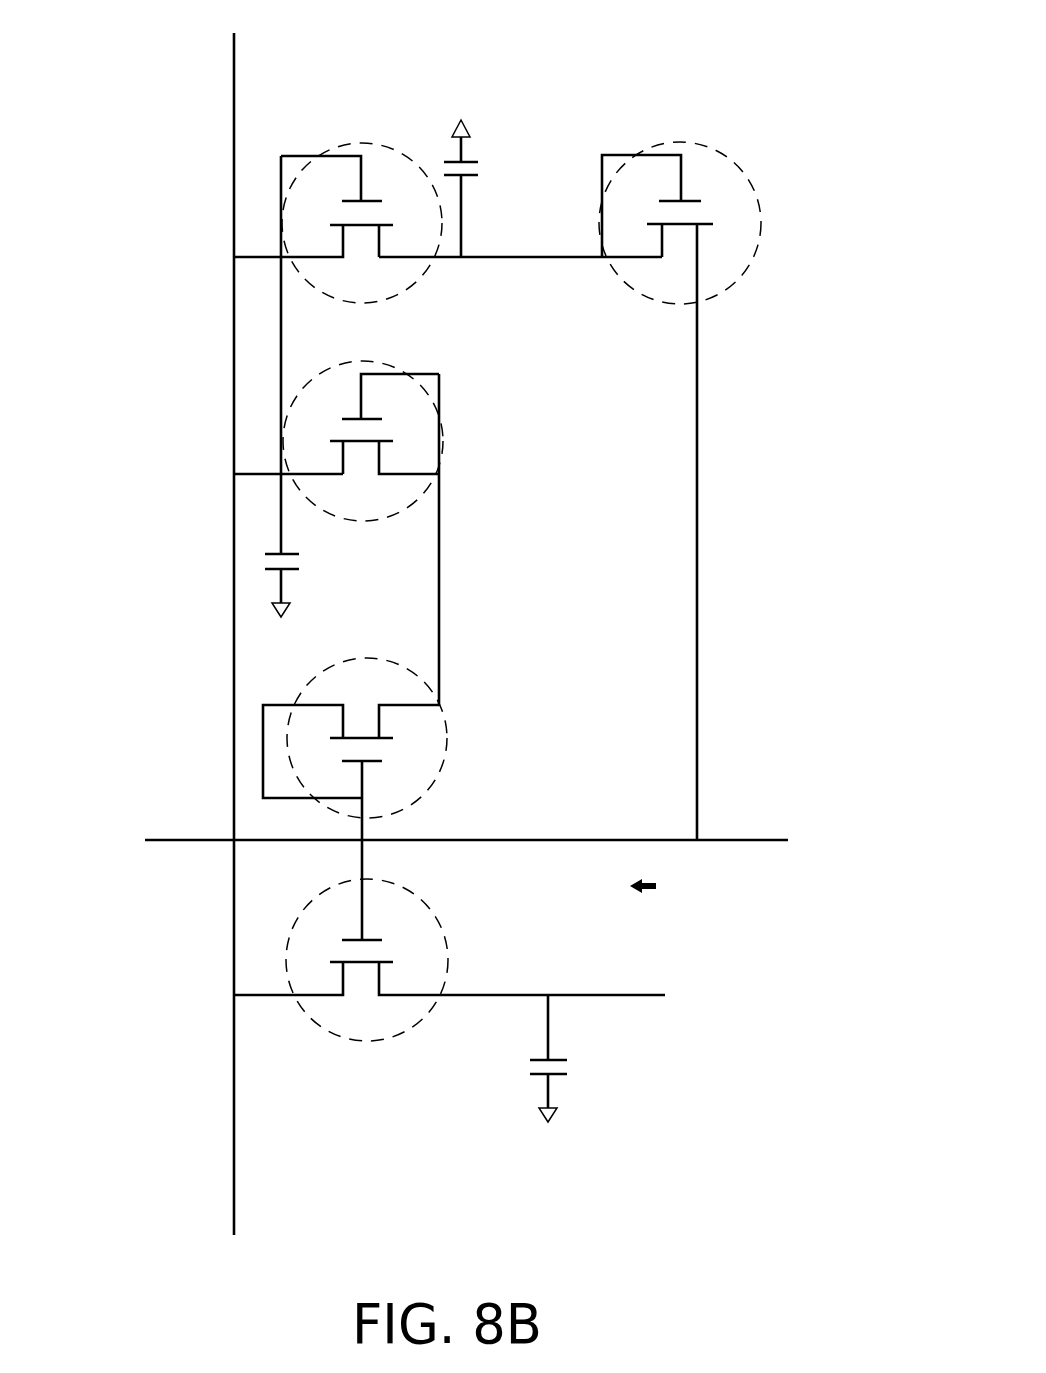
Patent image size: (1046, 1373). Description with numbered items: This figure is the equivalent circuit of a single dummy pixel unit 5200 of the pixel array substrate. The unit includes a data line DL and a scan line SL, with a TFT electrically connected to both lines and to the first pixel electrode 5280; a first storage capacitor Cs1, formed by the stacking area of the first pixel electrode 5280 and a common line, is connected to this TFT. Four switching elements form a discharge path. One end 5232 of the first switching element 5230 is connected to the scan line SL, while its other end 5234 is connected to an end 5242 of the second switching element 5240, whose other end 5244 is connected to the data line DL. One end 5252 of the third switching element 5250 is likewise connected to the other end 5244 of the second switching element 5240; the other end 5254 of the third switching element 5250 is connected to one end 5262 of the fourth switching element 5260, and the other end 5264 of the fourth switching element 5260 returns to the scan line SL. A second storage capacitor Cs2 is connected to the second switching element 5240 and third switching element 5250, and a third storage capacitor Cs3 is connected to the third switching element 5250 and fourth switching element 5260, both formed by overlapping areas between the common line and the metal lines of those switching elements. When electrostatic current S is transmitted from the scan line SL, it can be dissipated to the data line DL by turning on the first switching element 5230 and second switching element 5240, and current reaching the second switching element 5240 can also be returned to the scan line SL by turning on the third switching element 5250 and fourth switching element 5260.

The dummy pixel unit 5200 is at (873, 1209).
The first switching element 5230 is at (447, 725).
The one end of the first switching element 5232 is at (363, 807).
The other end of the first switching element 5234 is at (439, 615).
The second switching element 5240 is at (440, 500).
The end of the second switching element 5242 is at (439, 526).
The other end of the second switching element 5244 is at (259, 470).
The third switching element 5250 is at (402, 132).
The one end of the third switching element 5252 is at (282, 332).
The other end of the third switching element 5254 is at (408, 257).
The fourth switching element 5260 is at (722, 153).
The one end of the fourth switching element 5262 is at (565, 257).
The other end of the fourth switching element 5264 is at (698, 435).
The first pixel electrode 5280 is at (367, 1043).
The data line DL is at (234, 118).
The scan line SL is at (733, 839).
The electrostatic current S is at (657, 884).
The first storage capacitor Cs1 is at (551, 1082).
The second storage capacitor Cs2 is at (284, 566).
The third storage capacitor Cs3 is at (463, 161).